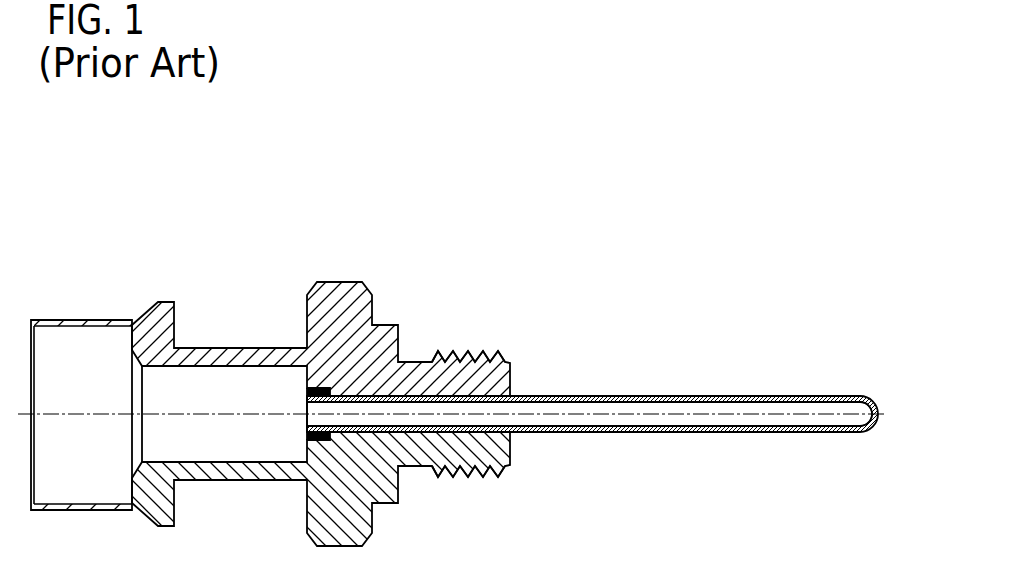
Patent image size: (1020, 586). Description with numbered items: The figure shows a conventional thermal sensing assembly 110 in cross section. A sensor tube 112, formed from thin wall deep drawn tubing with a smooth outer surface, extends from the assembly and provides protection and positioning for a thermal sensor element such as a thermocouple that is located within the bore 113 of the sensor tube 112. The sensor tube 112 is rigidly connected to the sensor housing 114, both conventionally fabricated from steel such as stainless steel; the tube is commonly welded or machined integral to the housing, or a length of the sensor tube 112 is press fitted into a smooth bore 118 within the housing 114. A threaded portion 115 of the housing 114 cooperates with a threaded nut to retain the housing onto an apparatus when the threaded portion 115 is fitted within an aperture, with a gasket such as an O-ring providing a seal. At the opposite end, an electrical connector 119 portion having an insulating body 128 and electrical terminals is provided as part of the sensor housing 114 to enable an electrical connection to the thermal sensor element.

The thermal sensing assembly 110 is at (76, 238).
The sensor tube 112 is at (673, 396).
The bore 113 is at (557, 407).
The sensor housing 114 is at (413, 380).
The threaded portion 115 is at (465, 476).
The smooth bore 118 is at (423, 433).
The electrical connector portion 119 is at (100, 510).
The insulating body 128 is at (50, 480).